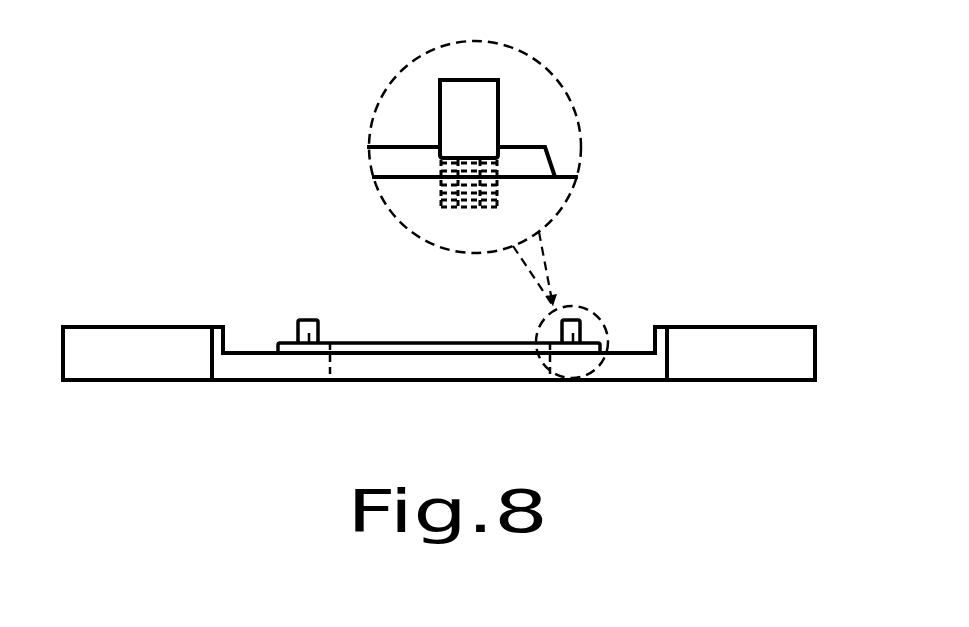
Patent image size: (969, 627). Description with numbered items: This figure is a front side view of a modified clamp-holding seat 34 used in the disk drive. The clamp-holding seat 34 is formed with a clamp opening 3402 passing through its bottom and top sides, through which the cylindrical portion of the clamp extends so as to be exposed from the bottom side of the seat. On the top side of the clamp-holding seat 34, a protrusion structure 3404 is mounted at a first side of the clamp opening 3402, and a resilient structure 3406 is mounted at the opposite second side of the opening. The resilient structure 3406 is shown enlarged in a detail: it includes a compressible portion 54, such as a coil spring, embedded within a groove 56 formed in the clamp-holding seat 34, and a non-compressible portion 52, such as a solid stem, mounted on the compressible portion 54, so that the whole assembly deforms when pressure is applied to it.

The clamp-holding seat 34 is at (812, 357).
The clamp opening 3402 is at (357, 359).
The protrusion structure 3404 is at (298, 336).
The resilient structure 3406 is at (504, 119).
The non-compressible portion 52 is at (488, 130).
The compressible portion 54 is at (503, 190).
The groove 56 is at (470, 212).